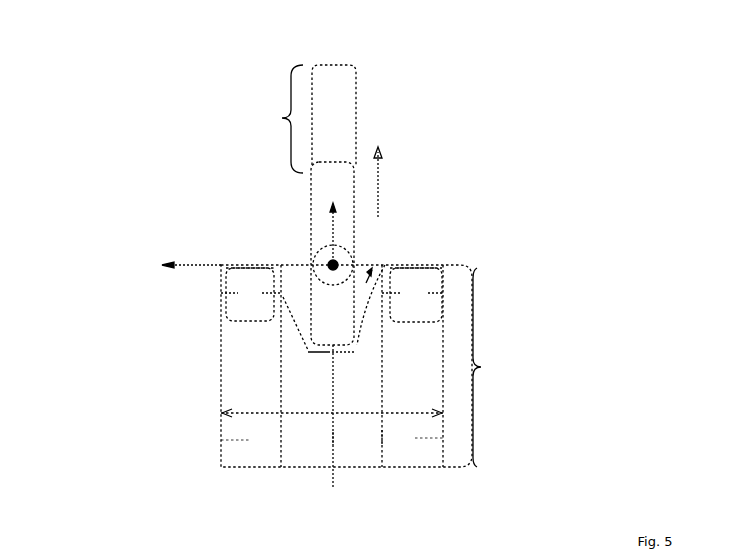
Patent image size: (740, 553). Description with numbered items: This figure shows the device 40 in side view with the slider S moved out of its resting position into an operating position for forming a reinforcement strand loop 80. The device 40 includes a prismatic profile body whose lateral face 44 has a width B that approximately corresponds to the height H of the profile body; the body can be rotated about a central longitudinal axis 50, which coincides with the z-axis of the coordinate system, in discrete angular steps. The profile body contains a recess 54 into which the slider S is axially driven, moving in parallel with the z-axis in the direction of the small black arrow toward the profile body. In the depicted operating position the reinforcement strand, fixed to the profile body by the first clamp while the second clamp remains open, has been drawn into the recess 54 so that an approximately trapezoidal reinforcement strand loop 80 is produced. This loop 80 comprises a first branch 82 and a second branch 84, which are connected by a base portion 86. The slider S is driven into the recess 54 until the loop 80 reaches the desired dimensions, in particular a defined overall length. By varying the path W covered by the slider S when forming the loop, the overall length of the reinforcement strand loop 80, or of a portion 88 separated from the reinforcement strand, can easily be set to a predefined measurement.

The device 40 is at (473, 79).
The lateral face 44 is at (250, 440).
The central longitudinal axis 50 is at (333, 437).
The recess 54 is at (365, 435).
The reinforcement strand loop 80 is at (301, 352).
The first branch 82 is at (300, 335).
The second branch 84 is at (385, 265).
The base portion 86 is at (312, 356).
The separated portion 88 is at (218, 293).